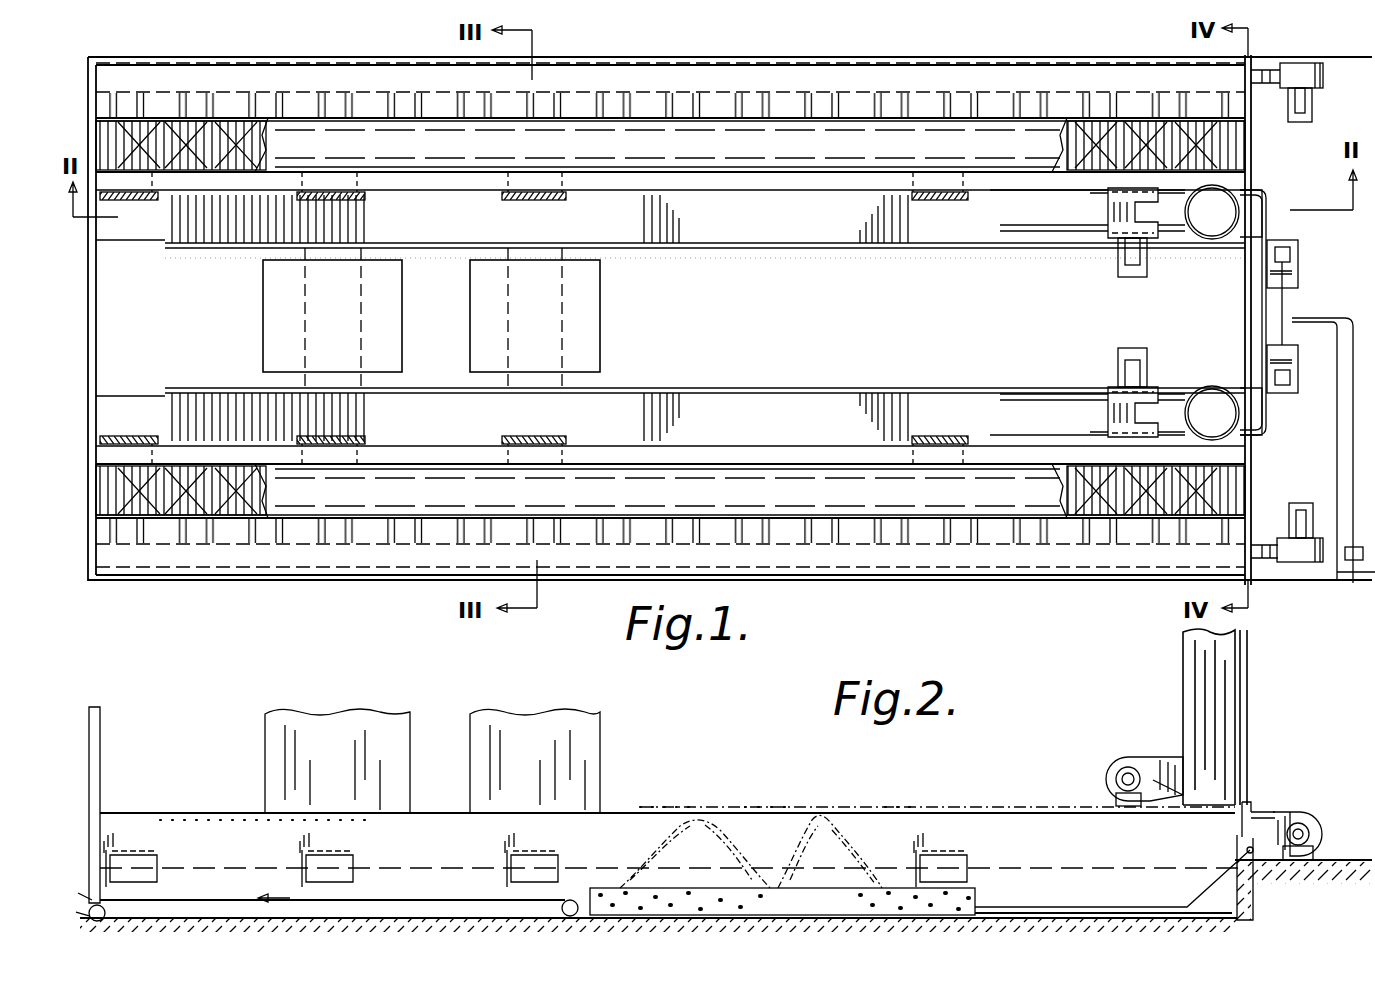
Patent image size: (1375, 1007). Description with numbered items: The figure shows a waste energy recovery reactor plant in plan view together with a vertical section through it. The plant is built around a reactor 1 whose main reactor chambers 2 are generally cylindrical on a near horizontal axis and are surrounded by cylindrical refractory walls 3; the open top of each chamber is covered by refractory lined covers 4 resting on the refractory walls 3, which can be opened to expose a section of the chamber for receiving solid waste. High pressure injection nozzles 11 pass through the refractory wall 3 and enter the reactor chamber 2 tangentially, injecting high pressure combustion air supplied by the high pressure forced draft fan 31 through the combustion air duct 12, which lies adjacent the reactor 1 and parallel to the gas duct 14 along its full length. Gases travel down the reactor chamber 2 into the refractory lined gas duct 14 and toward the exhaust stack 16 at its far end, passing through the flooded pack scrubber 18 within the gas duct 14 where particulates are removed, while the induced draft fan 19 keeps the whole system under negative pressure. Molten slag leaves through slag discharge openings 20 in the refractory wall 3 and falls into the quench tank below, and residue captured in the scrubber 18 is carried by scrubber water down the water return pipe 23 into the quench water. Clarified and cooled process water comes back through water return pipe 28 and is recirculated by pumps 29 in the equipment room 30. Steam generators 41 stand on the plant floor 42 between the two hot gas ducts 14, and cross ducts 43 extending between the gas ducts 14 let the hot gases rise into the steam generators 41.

In FIG. 1, the reactor 1 is at (962, 115).
In FIG. 1, the main reactor chamber 2 is at (685, 156).
In FIG. 1, the refractory wall 3 is at (478, 120).
In FIG. 1, the refractory lined cover 4 is at (262, 145).
In FIG. 1, the high pressure injection nozzle 11 is at (348, 110).
In FIG. 1, the combustion air duct 12 is at (926, 130).
In FIG. 1, the gas duct 14 is at (796, 228).
In FIG. 2, the gas duct 14 is at (1094, 844).
In FIG. 1, the exhaust stack 16 is at (1210, 240).
In FIG. 2, the exhaust stack 16 is at (1188, 662).
In FIG. 2, the flooded pack scrubber 18 is at (776, 850).
In FIG. 1, the induced draft fan 19 is at (1133, 228).
In FIG. 2, the induced draft fan 19 is at (1115, 757).
In FIG. 1, the slag discharge opening 20 is at (300, 178).
In FIG. 2, the slag discharge opening 20 is at (157, 858).
In FIG. 2, the water return pipe 23 is at (622, 890).
In FIG. 1, the water return pipe 28 is at (1353, 565).
In FIG. 1, the pump 29 is at (1300, 246).
In FIG. 1, the equipment room 30 is at (1370, 286).
In FIG. 2, the equipment room 30 is at (1320, 754).
In FIG. 1, the high pressure forced draft fan 31 is at (1322, 90).
In FIG. 2, the high pressure forced draft fan 31 is at (1300, 812).
In FIG. 1, the steam generator 41 is at (262, 302).
In FIG. 2, the steam generator 41 is at (265, 740).
In FIG. 1, the plant floor 42 is at (912, 326).
In FIG. 2, the plant floor 42 is at (833, 812).
In FIG. 1, the cross duct 43 is at (304, 350).